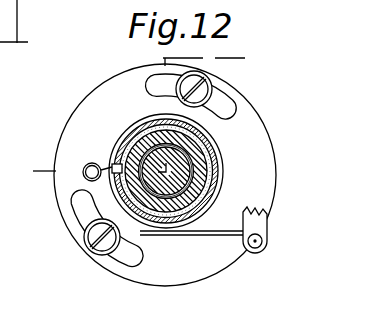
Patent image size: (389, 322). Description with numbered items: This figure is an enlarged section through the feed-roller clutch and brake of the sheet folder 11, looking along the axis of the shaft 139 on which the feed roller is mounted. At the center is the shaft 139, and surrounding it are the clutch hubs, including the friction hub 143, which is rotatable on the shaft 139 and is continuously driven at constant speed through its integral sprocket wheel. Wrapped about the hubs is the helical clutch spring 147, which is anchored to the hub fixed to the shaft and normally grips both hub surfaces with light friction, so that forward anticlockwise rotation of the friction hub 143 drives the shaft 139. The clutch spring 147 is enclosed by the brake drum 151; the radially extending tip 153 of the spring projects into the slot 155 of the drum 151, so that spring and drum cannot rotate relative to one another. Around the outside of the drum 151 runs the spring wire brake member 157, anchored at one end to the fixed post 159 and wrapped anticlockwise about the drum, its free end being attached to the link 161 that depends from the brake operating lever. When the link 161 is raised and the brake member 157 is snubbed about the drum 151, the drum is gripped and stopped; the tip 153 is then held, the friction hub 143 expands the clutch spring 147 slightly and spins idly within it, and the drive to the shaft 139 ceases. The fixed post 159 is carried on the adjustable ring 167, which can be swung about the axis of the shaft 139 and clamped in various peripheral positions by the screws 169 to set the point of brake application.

The sheet folder 11 is at (245, 52).
The shaft 139 is at (208, 140).
The friction hub 143 is at (205, 190).
The helical clutch spring 147 is at (205, 178).
The brake drum 151 is at (178, 165).
The radially extending tip 153 is at (104, 165).
The slot 155 is at (116, 163).
The spring wire brake member 157 is at (208, 237).
The fixed post 159 is at (83, 176).
The link 161 is at (256, 223).
The adjustable ring 167 is at (147, 278).
The screws 169 is at (209, 90).